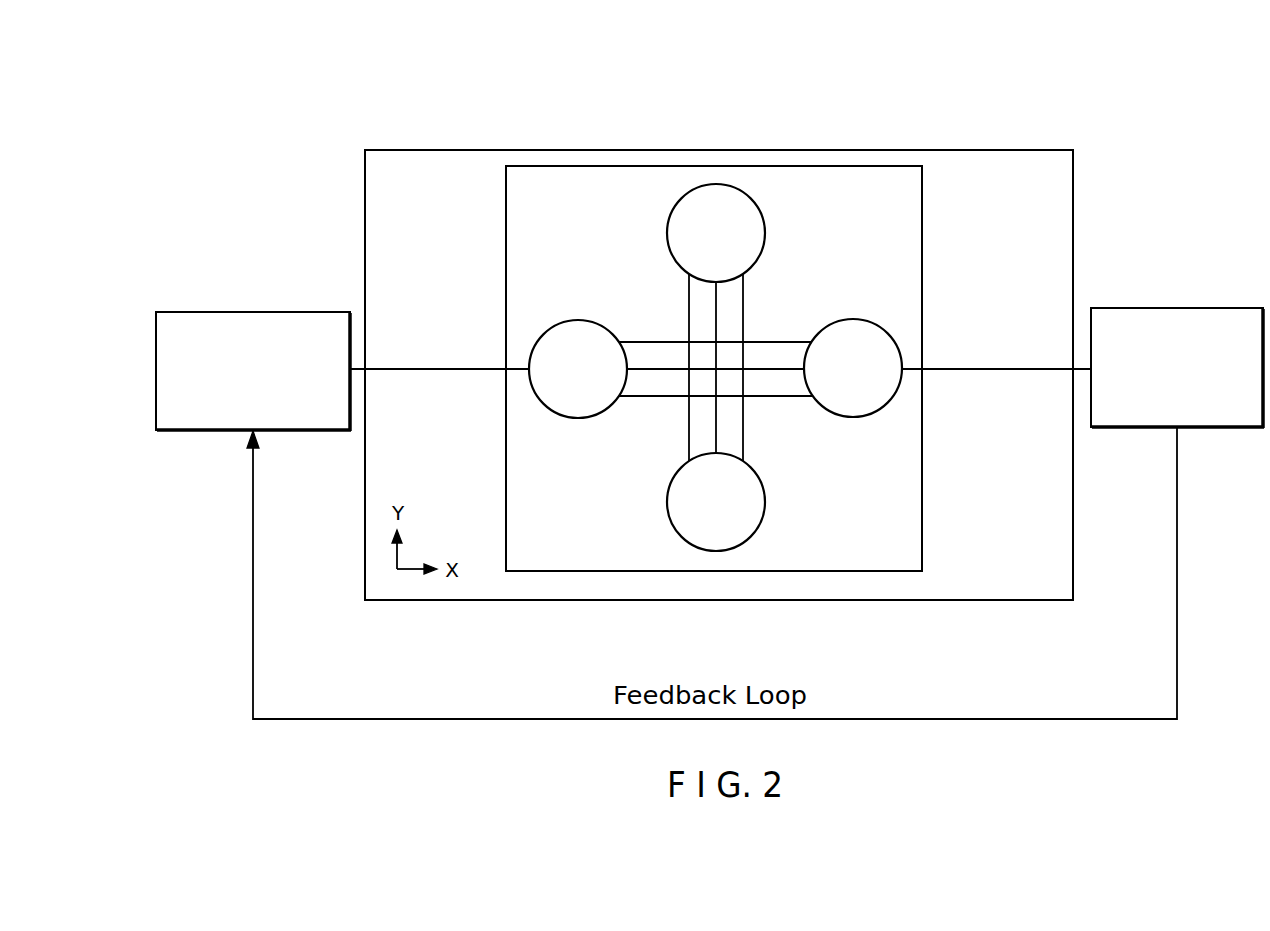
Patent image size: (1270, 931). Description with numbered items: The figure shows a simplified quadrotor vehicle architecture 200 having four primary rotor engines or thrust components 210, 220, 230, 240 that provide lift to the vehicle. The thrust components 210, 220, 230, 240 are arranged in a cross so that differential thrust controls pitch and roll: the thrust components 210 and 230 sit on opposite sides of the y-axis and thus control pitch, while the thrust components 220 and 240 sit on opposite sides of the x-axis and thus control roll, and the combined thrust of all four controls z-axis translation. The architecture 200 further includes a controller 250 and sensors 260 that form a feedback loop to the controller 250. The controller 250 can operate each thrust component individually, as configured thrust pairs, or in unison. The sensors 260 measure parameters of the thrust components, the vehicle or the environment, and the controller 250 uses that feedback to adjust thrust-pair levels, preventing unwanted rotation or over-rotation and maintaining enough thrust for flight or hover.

The simplified quadrotor vehicle architecture 200 is at (845, 113).
The thrust component 210 is at (570, 321).
The thrust component 220 is at (693, 190).
The thrust component 230 is at (848, 319).
The thrust component 240 is at (723, 550).
The controller 250 is at (267, 312).
The sensors 260 is at (1132, 308).